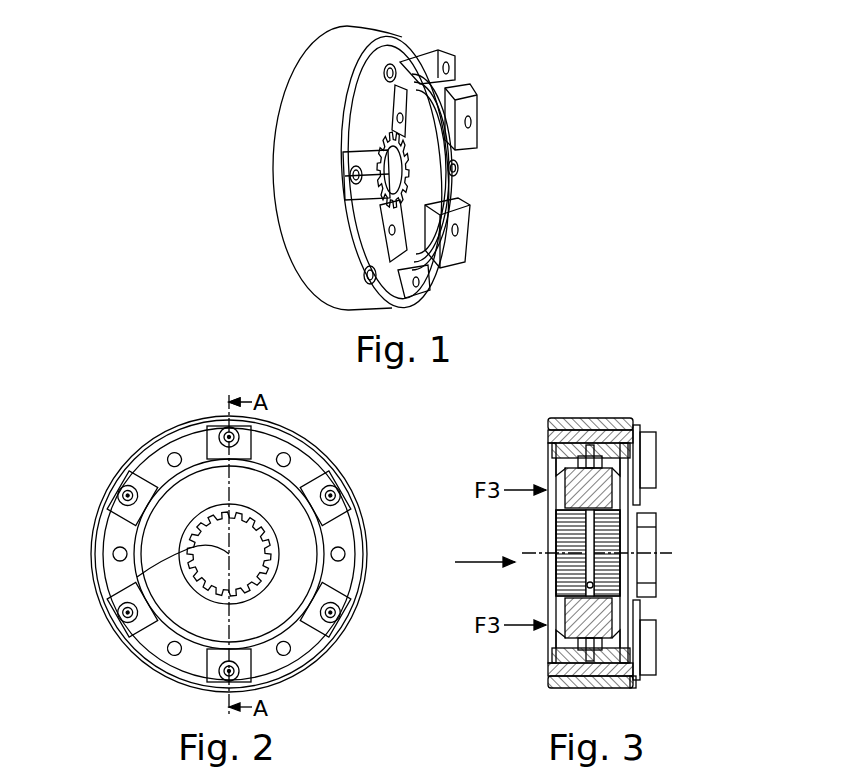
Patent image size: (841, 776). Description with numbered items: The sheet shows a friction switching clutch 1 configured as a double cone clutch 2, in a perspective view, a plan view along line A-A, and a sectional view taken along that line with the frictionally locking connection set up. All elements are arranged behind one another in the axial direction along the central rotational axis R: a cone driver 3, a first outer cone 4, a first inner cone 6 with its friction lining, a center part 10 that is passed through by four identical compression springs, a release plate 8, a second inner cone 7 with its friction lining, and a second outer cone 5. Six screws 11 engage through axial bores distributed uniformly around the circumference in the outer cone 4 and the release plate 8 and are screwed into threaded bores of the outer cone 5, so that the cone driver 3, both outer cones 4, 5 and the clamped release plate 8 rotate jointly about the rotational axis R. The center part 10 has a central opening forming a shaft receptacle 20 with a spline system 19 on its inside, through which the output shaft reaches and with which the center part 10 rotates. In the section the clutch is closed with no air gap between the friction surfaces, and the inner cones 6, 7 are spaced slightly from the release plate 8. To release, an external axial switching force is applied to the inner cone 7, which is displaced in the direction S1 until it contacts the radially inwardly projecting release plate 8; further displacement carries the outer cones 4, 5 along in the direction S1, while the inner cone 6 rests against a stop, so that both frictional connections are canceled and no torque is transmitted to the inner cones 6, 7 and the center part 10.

In FIG. 1, the friction switching clutch 1 is at (252, 66).
In FIG. 1, the double cone clutch 2 is at (238, 106).
In FIG. 1, the cone driver 3 is at (480, 94).
In FIG. 2, the cone driver 3 is at (308, 664).
In FIG. 3, the cone driver 3 is at (572, 420).
In FIG. 1, the first outer cone 4 is at (350, 196).
In FIG. 2, the first outer cone 4 is at (135, 484).
In FIG. 3, the first outer cone 4 is at (612, 430).
In FIG. 3, the second outer cone 5 is at (550, 430).
In FIG. 1, the first inner cone 6 is at (438, 235).
In FIG. 2, the first inner cone 6 is at (302, 569).
In FIG. 3, the first inner cone 6 is at (628, 455).
In FIG. 3, the second inner cone 7 is at (556, 458).
In FIG. 3, the release plate 8 is at (632, 686).
In FIG. 3, the center part 10 is at (614, 492).
In FIG. 1, the screws 11 is at (380, 70).
In FIG. 2, the screws 11 is at (246, 424).
In FIG. 3, the screws 11 is at (637, 428).
In FIG. 1, the spline system 19 is at (440, 182).
In FIG. 3, the spline system 19 is at (560, 532).
In FIG. 2, the shaft receptacle 20 is at (236, 550).
In FIG. 2, the rotational axis R is at (137, 577).
In FIG. 3, the rotational axis R is at (668, 553).
In FIG. 3, the displacement direction S1 is at (480, 562).